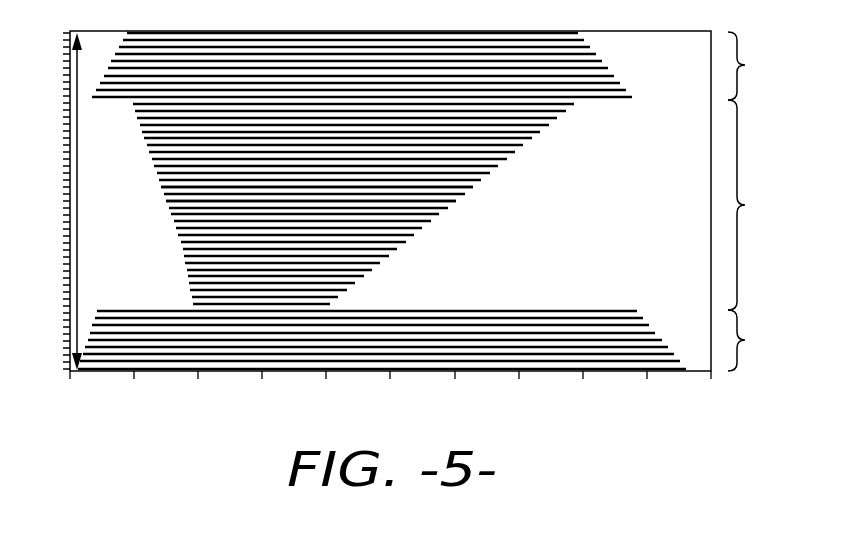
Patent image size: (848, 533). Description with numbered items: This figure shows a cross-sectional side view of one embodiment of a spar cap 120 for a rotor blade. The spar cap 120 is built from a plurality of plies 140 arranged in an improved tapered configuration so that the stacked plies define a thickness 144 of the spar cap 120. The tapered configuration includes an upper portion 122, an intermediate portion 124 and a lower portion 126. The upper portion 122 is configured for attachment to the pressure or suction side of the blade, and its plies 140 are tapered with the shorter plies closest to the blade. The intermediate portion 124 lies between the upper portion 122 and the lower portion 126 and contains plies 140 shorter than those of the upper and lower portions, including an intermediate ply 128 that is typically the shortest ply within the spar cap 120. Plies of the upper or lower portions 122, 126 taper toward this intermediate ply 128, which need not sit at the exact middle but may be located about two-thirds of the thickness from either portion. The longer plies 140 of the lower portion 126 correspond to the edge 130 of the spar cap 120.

The spar cap 120 is at (578, 155).
The upper portion 122 is at (642, 100).
The intermediate portion 124 is at (640, 310).
The lower portion 126 is at (433, 340).
The intermediate ply 128 is at (193, 308).
The edge 130 is at (552, 372).
The plies 140 is at (451, 204).
The thickness 144 is at (80, 225).